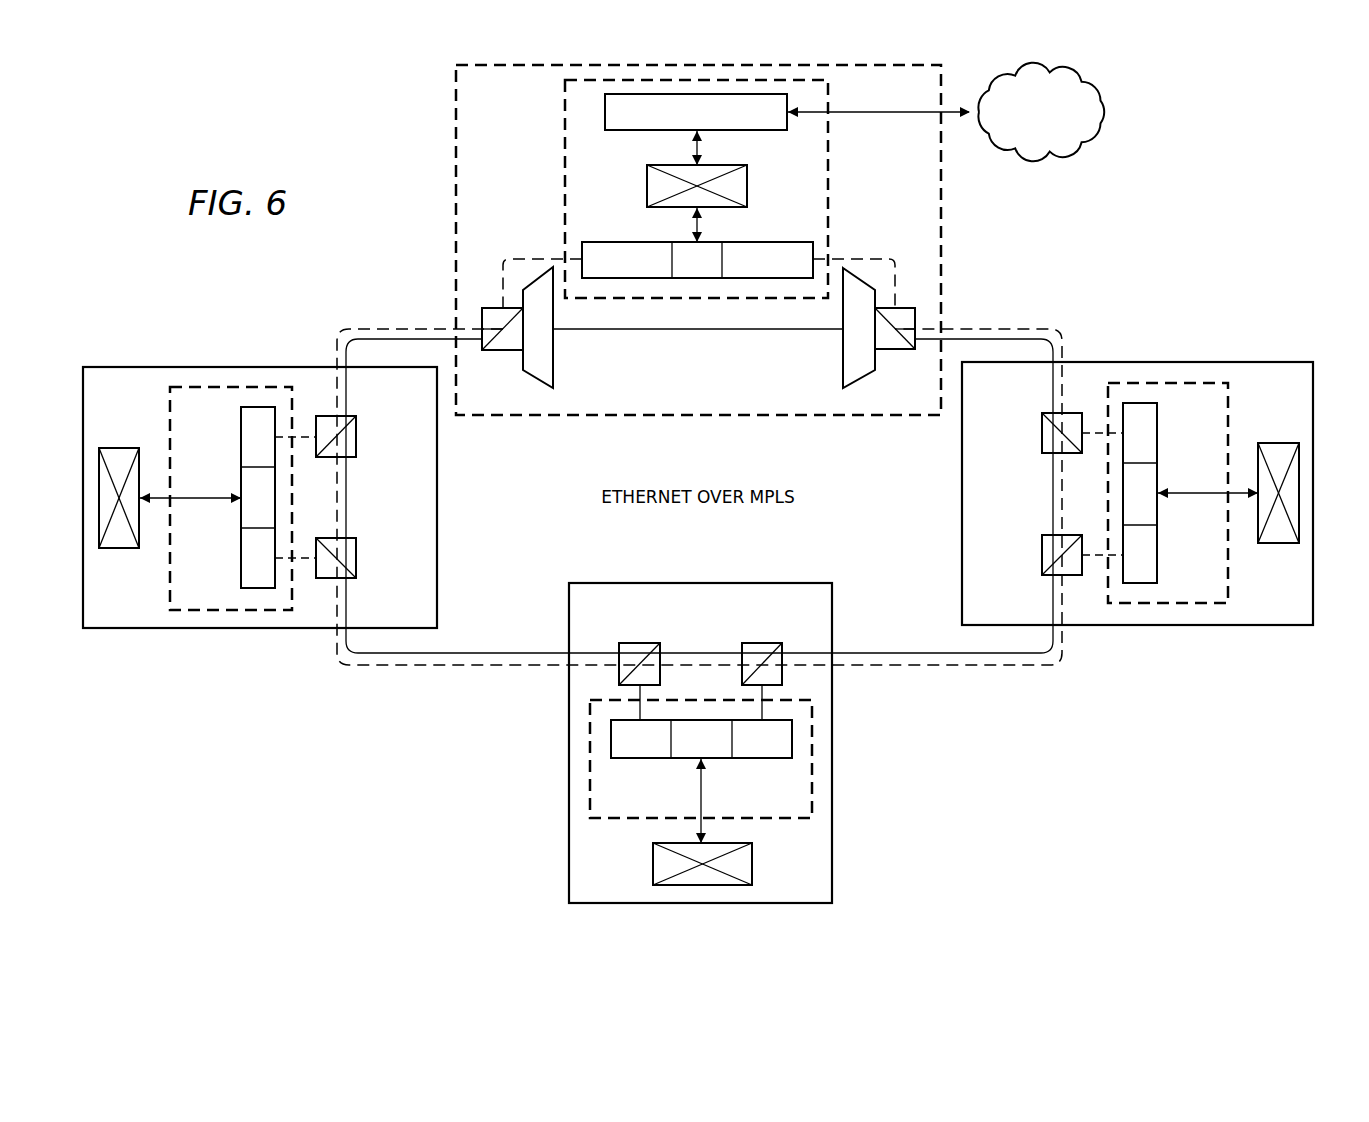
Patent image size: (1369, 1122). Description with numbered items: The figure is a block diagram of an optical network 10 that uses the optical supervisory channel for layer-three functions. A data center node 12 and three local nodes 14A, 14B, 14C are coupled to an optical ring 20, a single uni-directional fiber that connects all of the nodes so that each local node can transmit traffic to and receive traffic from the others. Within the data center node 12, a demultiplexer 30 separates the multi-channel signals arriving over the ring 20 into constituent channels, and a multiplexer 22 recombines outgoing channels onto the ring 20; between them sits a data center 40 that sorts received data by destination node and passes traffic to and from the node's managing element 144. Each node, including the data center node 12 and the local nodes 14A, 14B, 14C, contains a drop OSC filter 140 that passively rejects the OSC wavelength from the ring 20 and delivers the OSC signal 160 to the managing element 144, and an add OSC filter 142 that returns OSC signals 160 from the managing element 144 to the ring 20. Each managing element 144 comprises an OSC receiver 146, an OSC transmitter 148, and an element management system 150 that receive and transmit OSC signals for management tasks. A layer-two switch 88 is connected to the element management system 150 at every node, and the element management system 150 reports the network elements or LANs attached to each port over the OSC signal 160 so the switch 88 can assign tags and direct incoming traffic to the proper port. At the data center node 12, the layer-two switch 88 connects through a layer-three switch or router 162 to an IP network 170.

The optical network 10 is at (1220, 196).
The data center node 12 is at (455, 165).
The local node 14A is at (1190, 360).
The local node 14B is at (567, 775).
The local node 14C is at (210, 630).
The optical ring 20 is at (497, 654).
The multiplexer 22 is at (553, 372).
The demultiplexer 30 is at (843, 372).
The data center 40 is at (564, 162).
The layer-2 switch 88 is at (646, 178).
The drop OSC filter 140 is at (898, 349).
The add OSC filter 142 is at (502, 350).
The managing element 144 is at (168, 561).
The OSC receiver 146 is at (776, 241).
The OSC transmitter 148 is at (622, 241).
The element management system 150 is at (240, 480).
The OSC signal 160 is at (378, 329).
The layer-3 switch 162 is at (766, 131).
The IP network 170 is at (1110, 100).